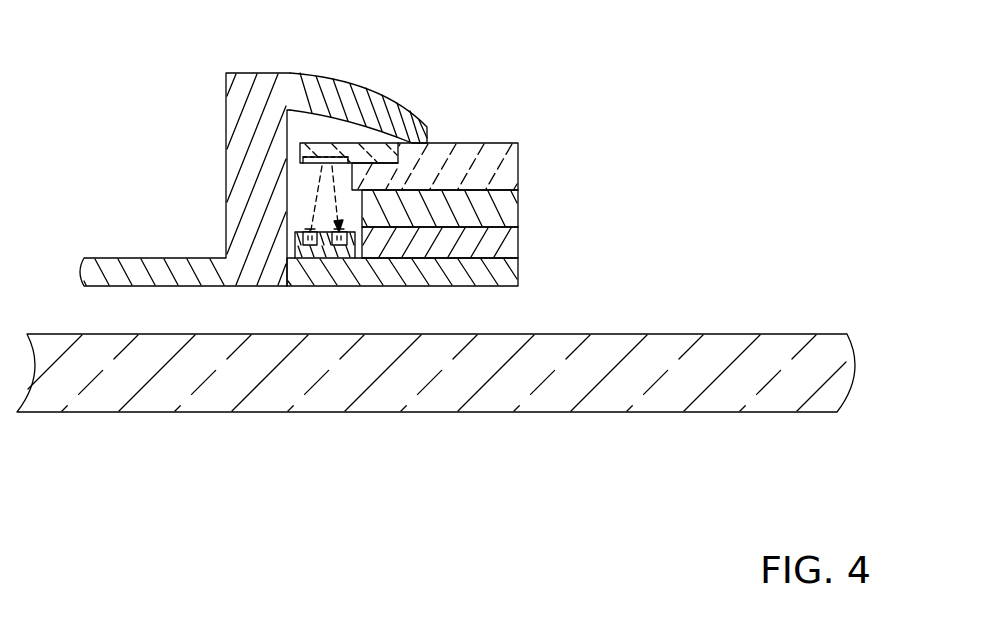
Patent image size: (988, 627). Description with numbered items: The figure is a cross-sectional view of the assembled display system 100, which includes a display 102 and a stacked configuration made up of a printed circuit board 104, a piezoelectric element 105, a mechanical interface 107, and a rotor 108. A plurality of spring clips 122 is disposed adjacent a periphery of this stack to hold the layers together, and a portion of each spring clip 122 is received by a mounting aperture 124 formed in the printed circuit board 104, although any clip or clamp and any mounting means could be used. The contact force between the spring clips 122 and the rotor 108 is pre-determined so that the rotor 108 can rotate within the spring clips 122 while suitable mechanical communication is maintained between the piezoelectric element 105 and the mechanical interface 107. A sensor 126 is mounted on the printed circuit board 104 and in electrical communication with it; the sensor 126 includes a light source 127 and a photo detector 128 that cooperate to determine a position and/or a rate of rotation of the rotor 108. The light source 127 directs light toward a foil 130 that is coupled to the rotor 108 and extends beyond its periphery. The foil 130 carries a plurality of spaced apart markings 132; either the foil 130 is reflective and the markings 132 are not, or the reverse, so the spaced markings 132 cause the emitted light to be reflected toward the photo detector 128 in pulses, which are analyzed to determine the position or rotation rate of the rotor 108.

The display system 100 is at (721, 121).
The display 102 is at (780, 333).
The printed circuit board 104 is at (518, 265).
The piezoelectric element 105 is at (518, 248).
The mechanical interface 107 is at (518, 198).
The rotor 108 is at (518, 152).
The spring clips 122 is at (226, 118).
The mounting aperture 124 is at (287, 273).
The sensor 126 is at (293, 238).
The light source 127 is at (300, 233).
The photo detector 128 is at (352, 224).
The foil 130 is at (360, 148).
The markings 132 is at (313, 164).